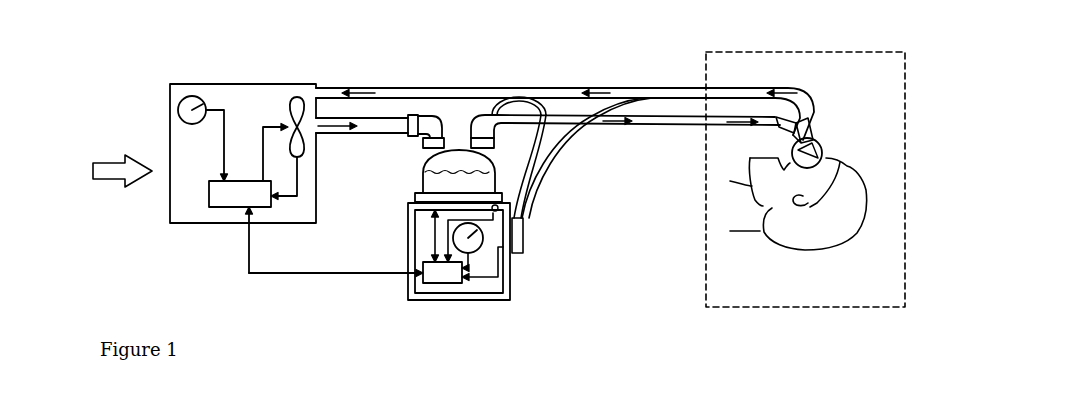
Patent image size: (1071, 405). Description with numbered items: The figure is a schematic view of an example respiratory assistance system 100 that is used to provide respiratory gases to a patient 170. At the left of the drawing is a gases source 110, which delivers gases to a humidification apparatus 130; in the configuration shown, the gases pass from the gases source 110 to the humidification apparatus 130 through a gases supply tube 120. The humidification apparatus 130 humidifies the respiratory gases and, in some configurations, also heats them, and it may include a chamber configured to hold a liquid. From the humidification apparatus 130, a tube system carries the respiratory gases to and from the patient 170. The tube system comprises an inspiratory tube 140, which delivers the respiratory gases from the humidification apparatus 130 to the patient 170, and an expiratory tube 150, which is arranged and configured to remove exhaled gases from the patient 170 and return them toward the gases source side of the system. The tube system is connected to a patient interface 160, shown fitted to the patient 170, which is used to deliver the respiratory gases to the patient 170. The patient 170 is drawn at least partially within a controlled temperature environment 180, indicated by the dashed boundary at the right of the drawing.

The respiratory assistance system 100 is at (118, 82).
The gases source 110 is at (190, 223).
The gases supply tube 120 is at (372, 130).
The humidification apparatus 130 is at (503, 285).
The inspiratory tube 140 is at (667, 125).
The expiratory tube 150 is at (732, 92).
The patient interface 160 is at (817, 140).
The patient 170 is at (805, 242).
The controlled temperature environment 180 is at (755, 308).